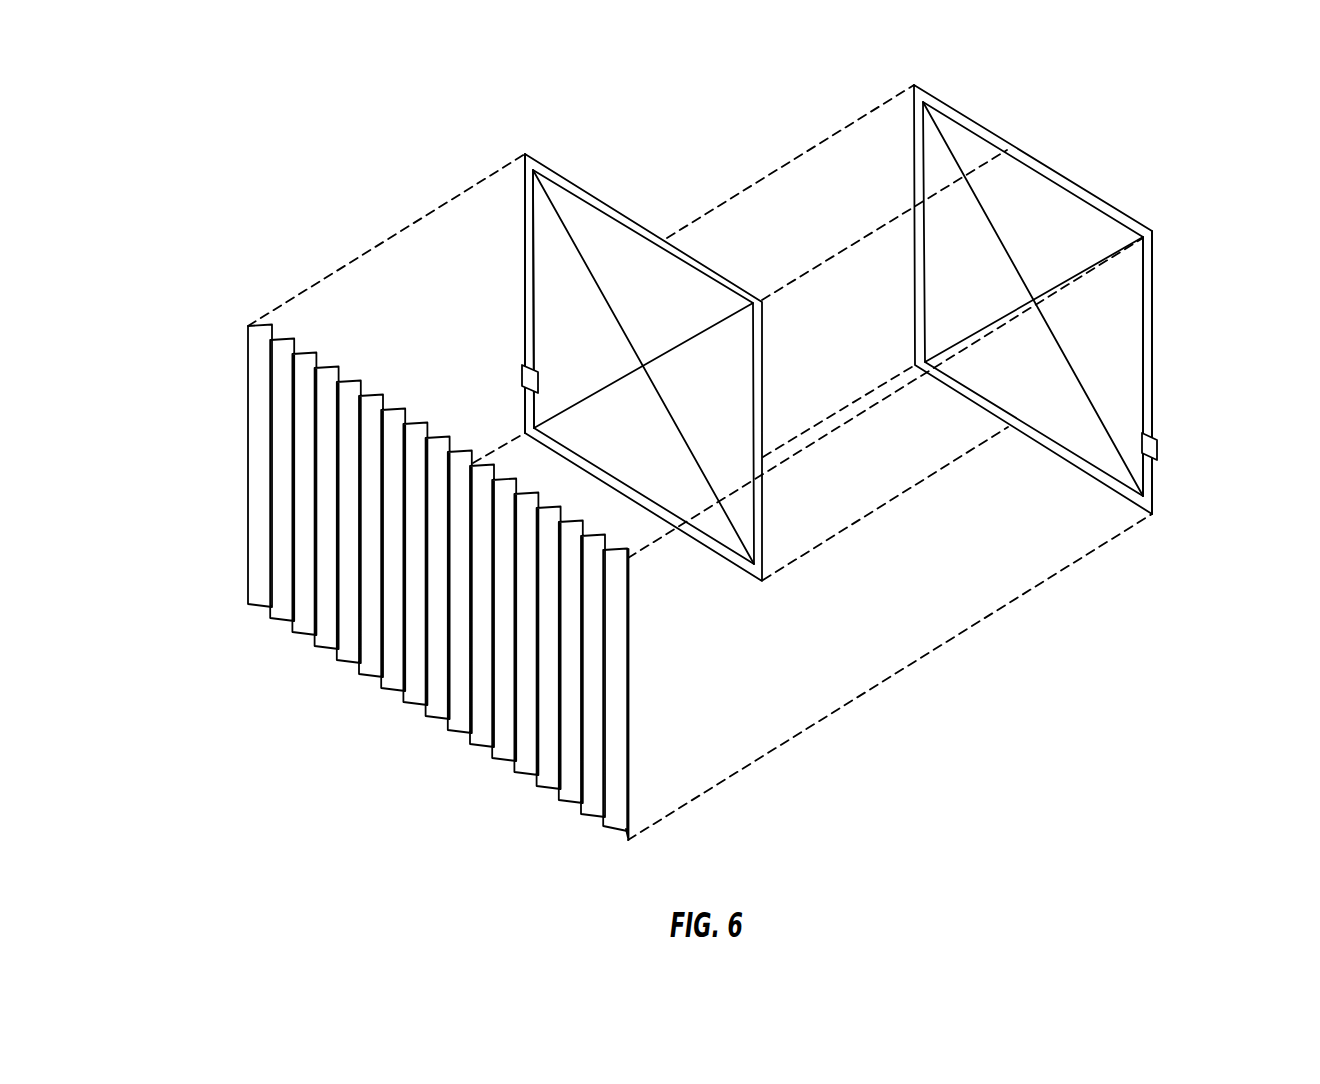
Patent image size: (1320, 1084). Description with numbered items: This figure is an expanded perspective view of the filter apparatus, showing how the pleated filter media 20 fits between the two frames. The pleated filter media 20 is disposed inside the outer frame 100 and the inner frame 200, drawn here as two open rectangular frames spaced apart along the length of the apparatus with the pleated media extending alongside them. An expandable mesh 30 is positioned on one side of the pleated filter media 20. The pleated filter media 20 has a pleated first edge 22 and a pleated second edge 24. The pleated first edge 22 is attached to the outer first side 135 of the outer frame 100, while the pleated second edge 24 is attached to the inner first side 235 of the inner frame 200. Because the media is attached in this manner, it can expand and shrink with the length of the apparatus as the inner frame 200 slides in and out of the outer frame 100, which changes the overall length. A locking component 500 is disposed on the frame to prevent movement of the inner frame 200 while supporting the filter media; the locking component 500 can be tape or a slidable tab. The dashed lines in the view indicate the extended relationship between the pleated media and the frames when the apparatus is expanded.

The pleated filter media 20 is at (340, 722).
The pleated first edge 22 is at (628, 702).
The pleated second edge 24 is at (247, 438).
The expandable mesh 30 is at (437, 583).
The outer frame 100 is at (1077, 299).
The outer first side 135 is at (1153, 298).
The inner frame 200 is at (612, 367).
The inner first side 235 is at (527, 275).
The locking component 500 is at (524, 377).